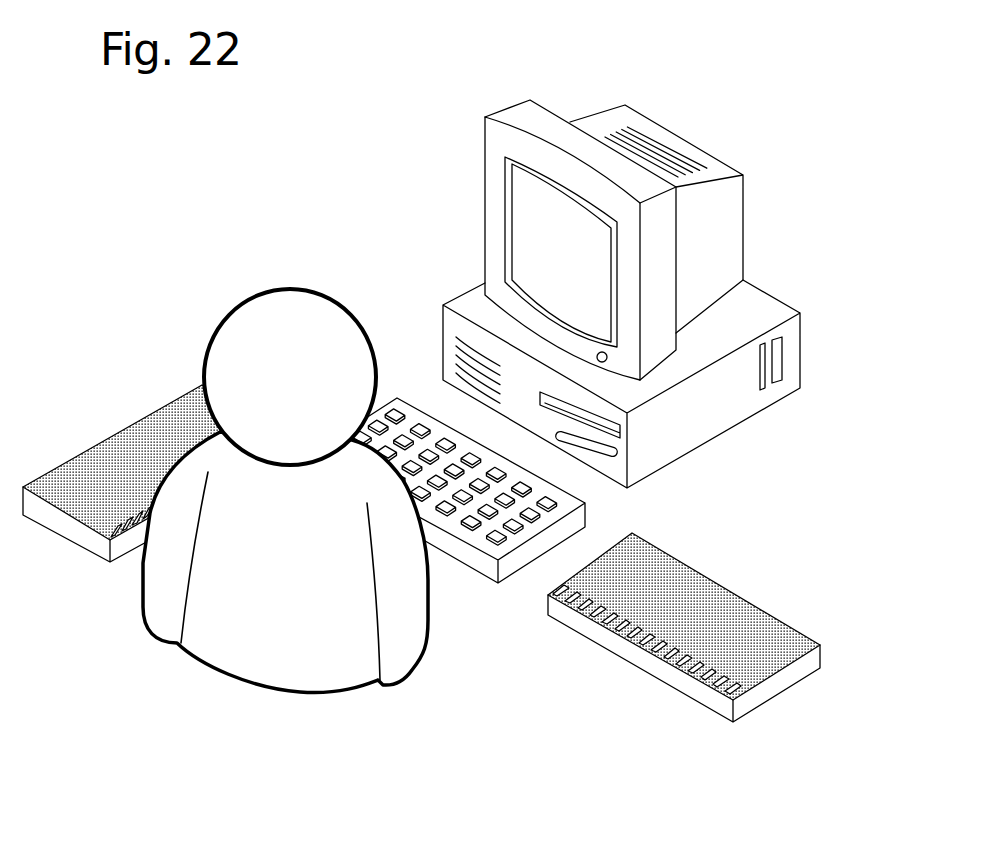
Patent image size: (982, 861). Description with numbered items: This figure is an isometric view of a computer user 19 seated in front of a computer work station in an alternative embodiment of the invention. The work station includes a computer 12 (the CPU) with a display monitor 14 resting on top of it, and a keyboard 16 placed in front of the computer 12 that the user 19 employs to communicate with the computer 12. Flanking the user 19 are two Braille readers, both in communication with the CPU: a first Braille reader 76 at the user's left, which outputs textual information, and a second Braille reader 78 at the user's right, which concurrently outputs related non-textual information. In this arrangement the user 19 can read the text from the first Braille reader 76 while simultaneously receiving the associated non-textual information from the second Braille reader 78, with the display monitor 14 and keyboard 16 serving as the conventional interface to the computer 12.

The computer 12 is at (785, 302).
The display monitor 14 is at (545, 110).
The keyboard 16 is at (435, 418).
The user 19 is at (430, 635).
The first Braille reader 76 is at (150, 413).
The second Braille reader 78 is at (678, 563).